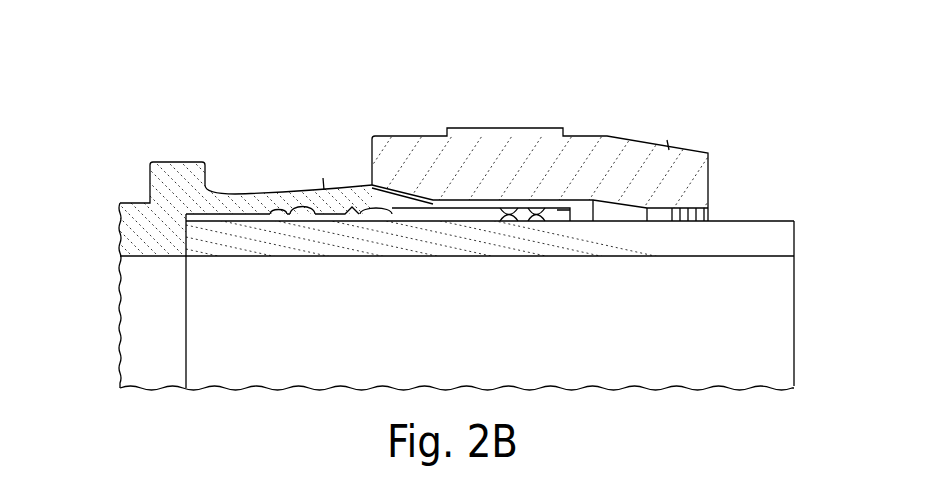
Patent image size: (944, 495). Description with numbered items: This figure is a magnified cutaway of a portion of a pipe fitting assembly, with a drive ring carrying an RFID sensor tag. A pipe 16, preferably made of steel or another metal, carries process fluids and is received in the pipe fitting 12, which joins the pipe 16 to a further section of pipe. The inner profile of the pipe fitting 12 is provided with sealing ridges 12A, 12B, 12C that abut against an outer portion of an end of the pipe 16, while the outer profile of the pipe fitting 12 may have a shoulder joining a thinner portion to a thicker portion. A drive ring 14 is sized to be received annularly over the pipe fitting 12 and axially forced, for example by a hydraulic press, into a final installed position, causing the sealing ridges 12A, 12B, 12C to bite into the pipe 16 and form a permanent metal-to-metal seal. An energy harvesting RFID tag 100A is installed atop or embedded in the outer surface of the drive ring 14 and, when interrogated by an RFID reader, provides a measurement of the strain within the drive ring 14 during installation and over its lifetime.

The pipe fitting 12 is at (121, 222).
The sealing ridge 12A is at (287, 220).
The sealing ridge 12B is at (380, 228).
The sealing ridge 12C is at (512, 221).
The drive ring 14 is at (583, 133).
The pipe 16 is at (768, 236).
The energy harvesting RFID tag 100A is at (483, 122).